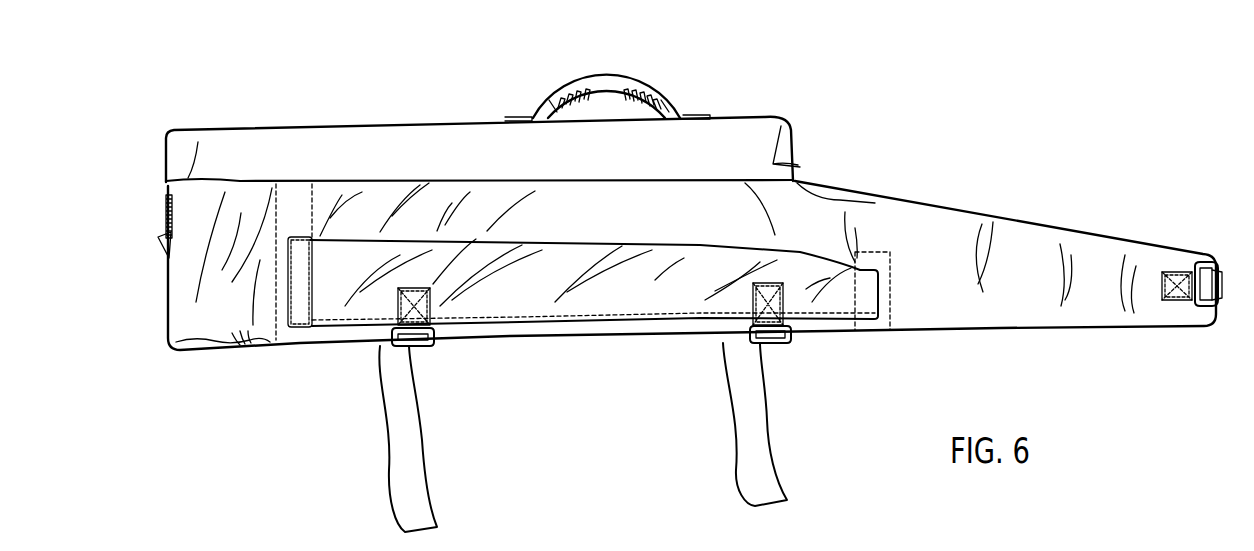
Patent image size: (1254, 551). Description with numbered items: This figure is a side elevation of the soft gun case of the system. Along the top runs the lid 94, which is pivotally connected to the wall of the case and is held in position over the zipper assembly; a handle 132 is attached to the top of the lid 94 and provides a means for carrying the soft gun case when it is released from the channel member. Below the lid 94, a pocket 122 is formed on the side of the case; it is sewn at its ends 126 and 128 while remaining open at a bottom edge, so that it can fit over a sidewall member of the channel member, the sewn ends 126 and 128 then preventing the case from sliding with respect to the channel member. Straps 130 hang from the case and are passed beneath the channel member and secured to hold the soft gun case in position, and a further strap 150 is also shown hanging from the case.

The lid 94 is at (498, 165).
The pocket 122 is at (518, 296).
The sewn end 126 is at (871, 299).
The sewn end 128 is at (297, 292).
The strap 130 is at (743, 426).
The handle 132 is at (547, 101).
The strap 150 is at (402, 435).